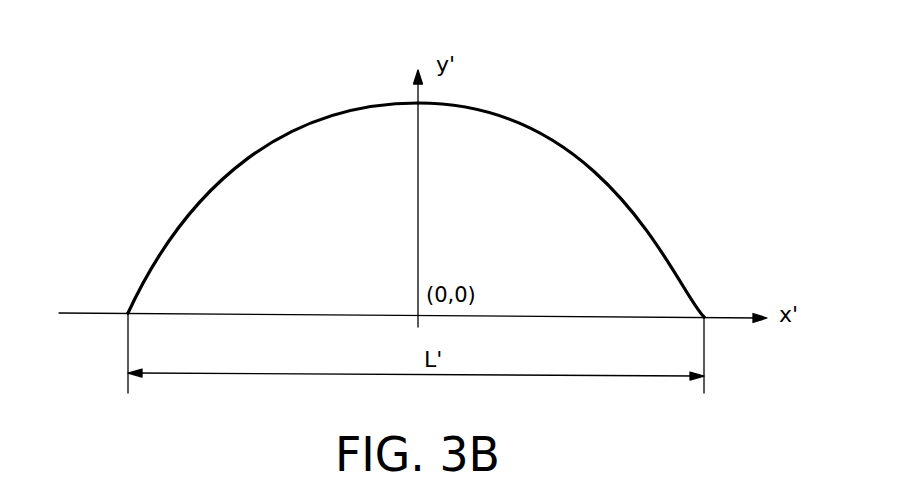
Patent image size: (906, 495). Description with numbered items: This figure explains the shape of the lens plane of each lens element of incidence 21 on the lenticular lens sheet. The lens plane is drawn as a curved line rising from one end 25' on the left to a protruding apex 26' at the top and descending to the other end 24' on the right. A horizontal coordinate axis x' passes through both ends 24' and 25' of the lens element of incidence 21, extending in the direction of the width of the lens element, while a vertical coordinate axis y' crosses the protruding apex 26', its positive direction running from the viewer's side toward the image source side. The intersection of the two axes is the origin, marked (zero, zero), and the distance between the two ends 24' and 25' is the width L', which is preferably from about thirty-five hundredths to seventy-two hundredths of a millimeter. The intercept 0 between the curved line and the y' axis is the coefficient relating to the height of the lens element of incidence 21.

The lens element of incidence 21 is at (230, 112).
The protruding apex 26' is at (479, 76).
The end of the lens element of incidence 25' is at (101, 264).
The end of the lens element of incidence 24' is at (718, 272).
The intercept 0 is at (428, 115).